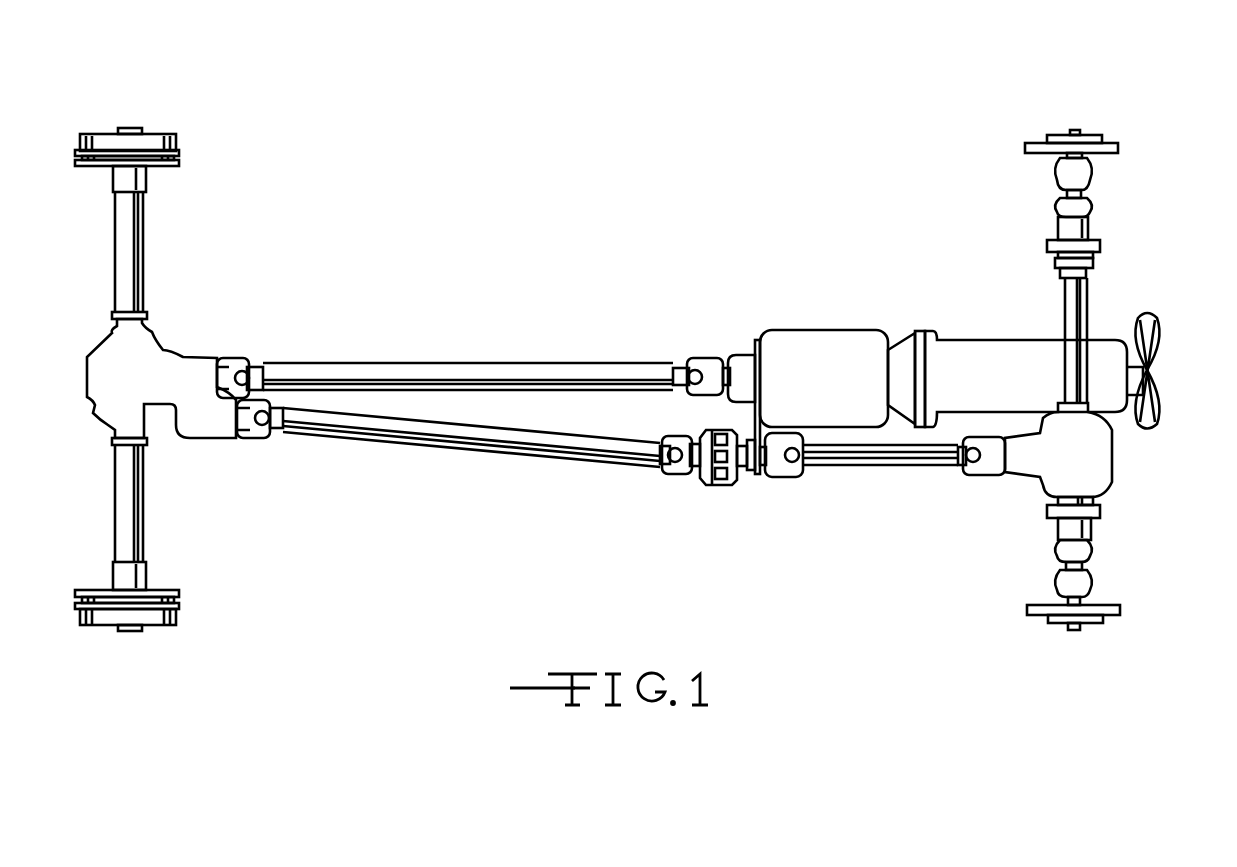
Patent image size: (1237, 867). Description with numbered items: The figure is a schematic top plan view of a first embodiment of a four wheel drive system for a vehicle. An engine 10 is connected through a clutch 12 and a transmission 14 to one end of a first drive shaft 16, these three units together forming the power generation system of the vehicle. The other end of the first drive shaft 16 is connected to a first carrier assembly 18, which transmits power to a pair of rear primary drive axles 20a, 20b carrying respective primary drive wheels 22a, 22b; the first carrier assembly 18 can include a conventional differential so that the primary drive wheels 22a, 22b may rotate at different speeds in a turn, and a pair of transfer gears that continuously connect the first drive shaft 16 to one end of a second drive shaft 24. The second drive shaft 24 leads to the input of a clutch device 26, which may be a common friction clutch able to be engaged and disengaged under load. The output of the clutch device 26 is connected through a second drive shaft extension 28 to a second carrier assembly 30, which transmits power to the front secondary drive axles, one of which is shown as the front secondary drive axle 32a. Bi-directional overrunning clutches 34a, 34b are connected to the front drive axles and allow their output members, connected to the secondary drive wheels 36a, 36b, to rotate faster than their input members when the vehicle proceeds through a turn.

The engine 10 is at (975, 358).
The clutch 12 is at (900, 357).
The transmission 14 is at (808, 352).
The first drive shaft 16 is at (532, 363).
The first carrier assembly 18 is at (160, 362).
The rear primary drive axle 20a is at (145, 255).
The rear primary drive axle 20b is at (145, 523).
The primary drive wheel 22a is at (142, 138).
The primary drive wheel 22b is at (150, 620).
The second drive shaft 24 is at (540, 458).
The clutch device 26 is at (722, 478).
The second drive shaft extension 28 is at (905, 463).
The second carrier assembly 30 is at (1085, 458).
The front secondary drive axle 32a is at (1087, 303).
The bi-directional overrunning clutch 34a is at (1093, 262).
The bi-directional overrunning clutch 34b is at (1095, 500).
The secondary drive wheel 36a is at (1090, 143).
The secondary drive wheel 36b is at (1090, 630).